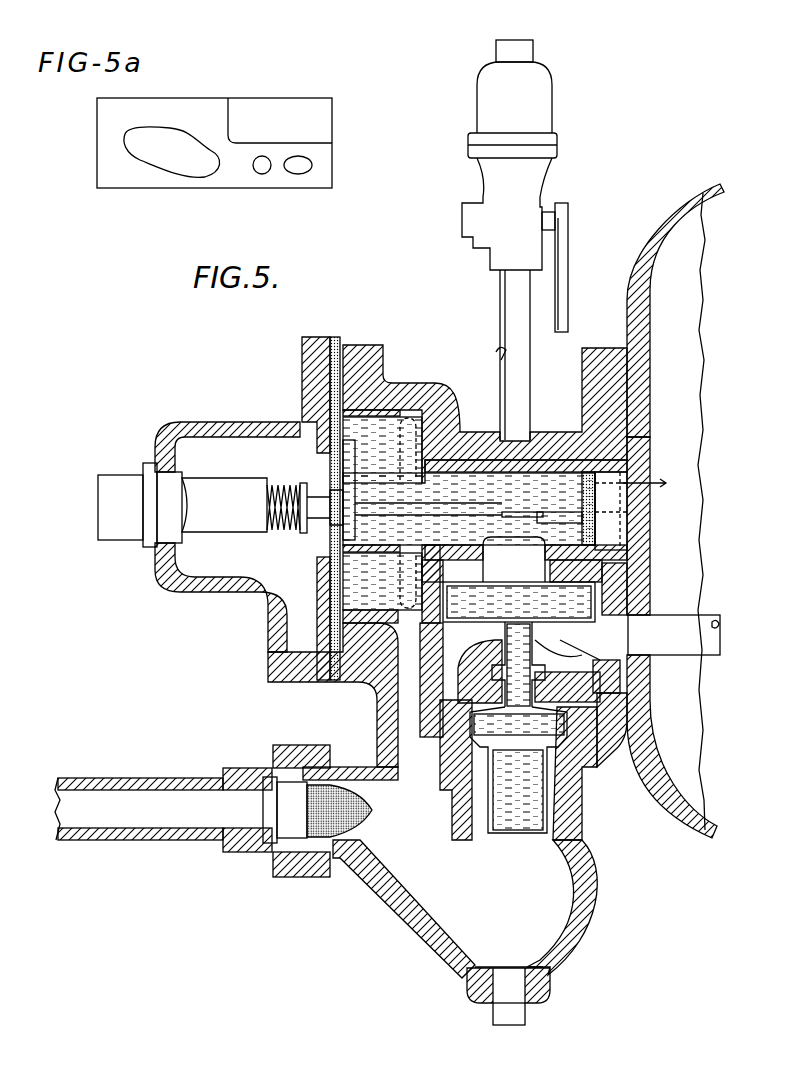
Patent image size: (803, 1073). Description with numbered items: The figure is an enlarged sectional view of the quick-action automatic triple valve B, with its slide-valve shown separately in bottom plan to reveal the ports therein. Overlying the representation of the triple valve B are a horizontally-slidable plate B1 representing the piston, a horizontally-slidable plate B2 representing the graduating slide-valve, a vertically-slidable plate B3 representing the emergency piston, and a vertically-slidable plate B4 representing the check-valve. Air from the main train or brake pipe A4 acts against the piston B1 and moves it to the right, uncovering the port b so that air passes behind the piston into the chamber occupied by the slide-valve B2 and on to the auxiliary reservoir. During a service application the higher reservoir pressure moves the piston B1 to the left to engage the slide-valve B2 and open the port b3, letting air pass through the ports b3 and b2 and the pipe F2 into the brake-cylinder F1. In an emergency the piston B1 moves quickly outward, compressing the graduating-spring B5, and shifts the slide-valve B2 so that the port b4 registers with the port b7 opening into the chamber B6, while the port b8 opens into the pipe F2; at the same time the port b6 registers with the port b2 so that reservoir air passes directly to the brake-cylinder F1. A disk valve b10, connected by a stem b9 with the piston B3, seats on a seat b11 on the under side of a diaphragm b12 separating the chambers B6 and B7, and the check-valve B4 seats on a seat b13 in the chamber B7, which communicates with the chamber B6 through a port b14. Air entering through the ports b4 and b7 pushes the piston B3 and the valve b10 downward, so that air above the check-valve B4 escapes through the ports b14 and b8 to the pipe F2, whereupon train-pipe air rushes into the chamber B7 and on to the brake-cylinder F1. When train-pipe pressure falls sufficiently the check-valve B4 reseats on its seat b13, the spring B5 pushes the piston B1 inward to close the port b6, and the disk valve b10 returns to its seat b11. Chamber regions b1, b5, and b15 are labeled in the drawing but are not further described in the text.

In FIG. 5, the quick-action automatic triple valve B is at (418, 393).
In FIG. 5, the piston B1 is at (469, 492).
In FIG. 5, the graduating slide-valve B2 is at (526, 456).
In FIG. 5A, the emergency piston B3 is at (172, 139).
In FIG. 5, the emergency piston B3 is at (519, 602).
In FIG. 5, the check-valve B4 is at (518, 770).
In FIG. 5, the graduating-spring B5 is at (277, 488).
In FIG. 5, the chamber B6 is at (452, 632).
In FIG. 5, the chamber B7 is at (470, 708).
In FIG. 5, the port b is at (405, 420).
In FIG. 5, the chamber b1 is at (505, 545).
In FIG. 5, the port b2 is at (617, 535).
In FIG. 5, the port b3 is at (436, 577).
In FIG. 5, the port b4 is at (630, 511).
In FIG. 5, the slide valve b5 is at (542, 527).
In FIG. 5A, the port b6 is at (282, 143).
In FIG. 5, the port b6 is at (558, 530).
In FIG. 5, the port b7 is at (520, 572).
In FIG. 5, the port b8 is at (605, 641).
In FIG. 5, the stem b9 is at (518, 664).
In FIG. 5, the disk valve b10 is at (470, 722).
In FIG. 5, the seat b11 is at (612, 709).
In FIG. 5, the diaphragm b12 is at (612, 690).
In FIG. 5, the seat b13 is at (578, 787).
In FIG. 5, the port b14 is at (569, 643).
In FIG. 5, the lower diaphragm b15 is at (382, 581).
In FIG. 5, the train or brake pipe A4 is at (139, 809).
In FIG. 5, the brake-cylinder F1 is at (675, 511).
In FIG. 5, the pipe F2 is at (674, 635).